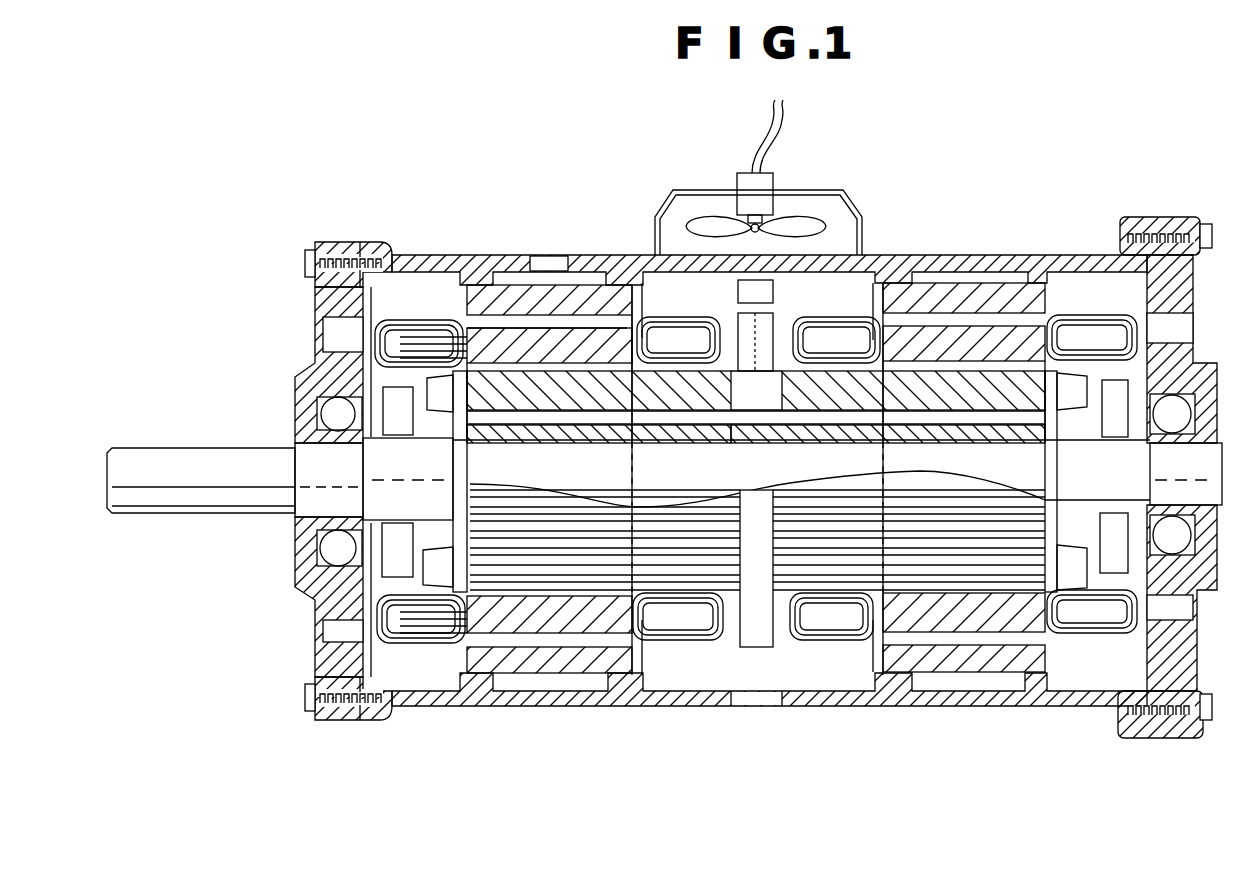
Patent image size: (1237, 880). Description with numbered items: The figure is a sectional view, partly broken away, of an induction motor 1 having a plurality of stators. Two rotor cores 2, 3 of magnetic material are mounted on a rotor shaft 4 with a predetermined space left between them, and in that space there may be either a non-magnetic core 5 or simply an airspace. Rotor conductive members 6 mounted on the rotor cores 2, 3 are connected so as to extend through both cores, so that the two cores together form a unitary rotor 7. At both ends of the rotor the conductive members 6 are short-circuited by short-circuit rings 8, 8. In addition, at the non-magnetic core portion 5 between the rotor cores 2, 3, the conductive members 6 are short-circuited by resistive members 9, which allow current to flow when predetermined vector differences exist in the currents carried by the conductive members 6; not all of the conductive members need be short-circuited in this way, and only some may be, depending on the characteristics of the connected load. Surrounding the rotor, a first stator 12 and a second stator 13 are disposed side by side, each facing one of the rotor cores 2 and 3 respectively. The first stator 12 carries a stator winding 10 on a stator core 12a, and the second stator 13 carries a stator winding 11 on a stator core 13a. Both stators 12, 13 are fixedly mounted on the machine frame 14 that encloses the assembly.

The induction motor 1 is at (383, 196).
The rotor core 2 is at (905, 550).
The rotor core 3 is at (503, 403).
The rotor shaft 4 is at (664, 479).
The non-magnetic core 5 is at (725, 555).
The rotor conductive members 6 is at (600, 540).
The unitary rotor 7 is at (575, 518).
The short-circuit rings 8 is at (460, 407).
The resistive members 9 is at (738, 330).
The stator winding 10 is at (1124, 636).
The stator winding 11 is at (438, 625).
The first stator 12 is at (1003, 662).
The stator core 12a is at (952, 620).
The second stator 13 is at (572, 663).
The stator core 13a is at (527, 620).
The machine frame 14 is at (590, 256).